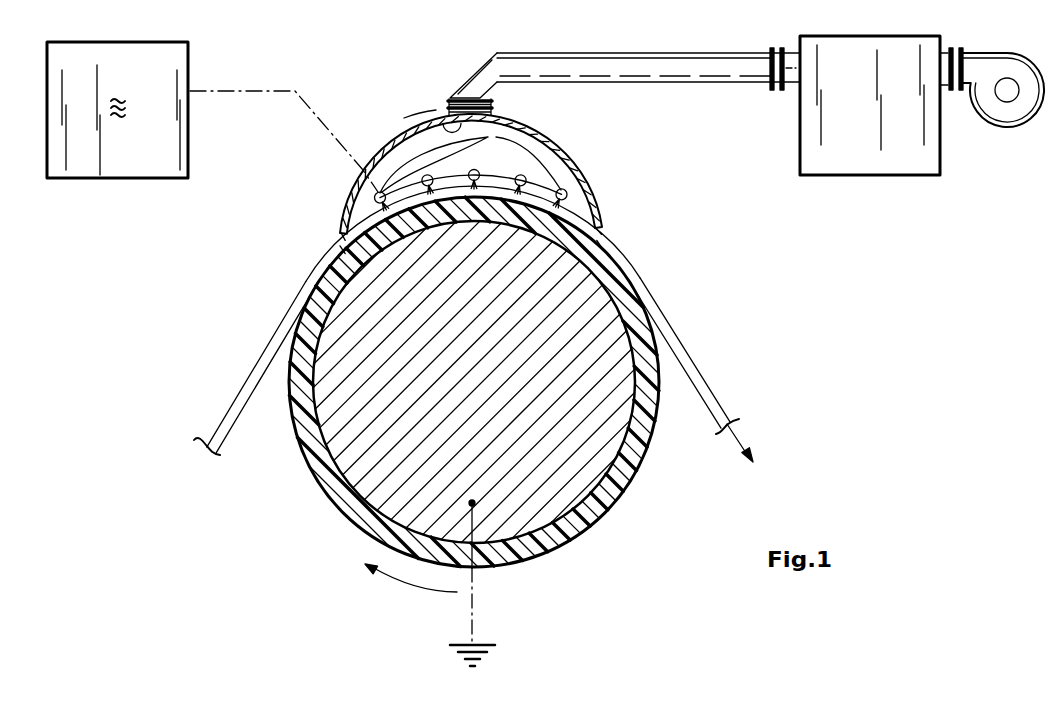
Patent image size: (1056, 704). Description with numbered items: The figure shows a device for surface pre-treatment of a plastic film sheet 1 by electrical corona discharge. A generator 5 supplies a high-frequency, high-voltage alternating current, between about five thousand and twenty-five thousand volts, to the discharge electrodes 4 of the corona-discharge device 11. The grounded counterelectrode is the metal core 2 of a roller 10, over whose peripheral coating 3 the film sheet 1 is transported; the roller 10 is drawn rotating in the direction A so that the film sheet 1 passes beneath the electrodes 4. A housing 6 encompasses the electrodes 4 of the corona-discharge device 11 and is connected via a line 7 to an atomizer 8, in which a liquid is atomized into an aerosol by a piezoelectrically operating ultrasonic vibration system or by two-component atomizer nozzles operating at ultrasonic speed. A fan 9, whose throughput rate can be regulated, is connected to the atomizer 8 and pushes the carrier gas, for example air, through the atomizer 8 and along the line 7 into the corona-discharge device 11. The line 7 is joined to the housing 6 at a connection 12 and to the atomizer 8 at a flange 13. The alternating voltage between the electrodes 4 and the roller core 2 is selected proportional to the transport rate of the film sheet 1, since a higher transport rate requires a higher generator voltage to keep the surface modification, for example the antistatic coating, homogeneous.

The film sheet 1 is at (678, 348).
The metal core 2 is at (570, 482).
The peripheral coating 3 is at (348, 502).
The discharge electrodes 4 is at (517, 174).
The generator 5 is at (118, 165).
The housing 6 is at (399, 137).
The line 7 is at (645, 68).
The atomizer 8 is at (860, 158).
The fan 9 is at (1012, 110).
The roller 10 is at (648, 465).
The corona-discharge device 11 is at (419, 118).
The duct connection flange 12 is at (442, 123).
The duct flange 13 is at (792, 57).
The direction of rotation A is at (403, 583).